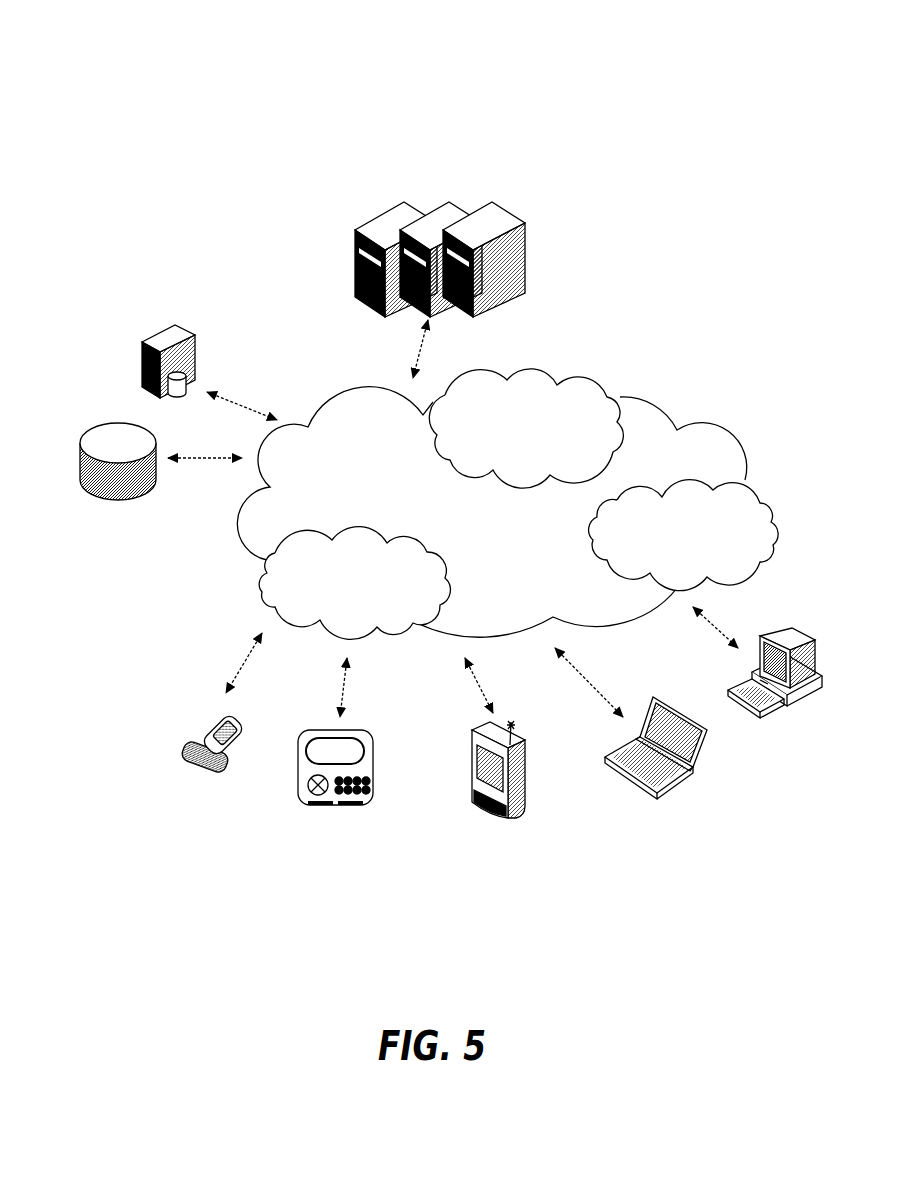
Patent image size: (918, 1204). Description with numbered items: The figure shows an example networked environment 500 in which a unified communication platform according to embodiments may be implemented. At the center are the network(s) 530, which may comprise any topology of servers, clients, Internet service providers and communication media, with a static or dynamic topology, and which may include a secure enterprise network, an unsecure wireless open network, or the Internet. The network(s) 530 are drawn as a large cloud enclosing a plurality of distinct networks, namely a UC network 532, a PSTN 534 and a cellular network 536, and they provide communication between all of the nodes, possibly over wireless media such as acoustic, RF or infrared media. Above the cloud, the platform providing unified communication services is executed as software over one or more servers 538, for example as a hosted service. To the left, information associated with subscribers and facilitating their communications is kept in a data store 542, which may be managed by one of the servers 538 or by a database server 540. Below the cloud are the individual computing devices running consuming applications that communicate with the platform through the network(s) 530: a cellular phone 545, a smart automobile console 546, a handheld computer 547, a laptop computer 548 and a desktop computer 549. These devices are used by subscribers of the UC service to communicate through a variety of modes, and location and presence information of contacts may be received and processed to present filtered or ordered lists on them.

The network environment 500 is at (633, 72).
The network(s) 530 is at (366, 378).
The UC network 532 is at (561, 375).
The PSTN 534 is at (309, 524).
The cellular network 536 is at (658, 473).
The servers 538 is at (367, 202).
The database server 540 is at (168, 315).
The data store 542 is at (130, 415).
The cellular phone 545 is at (189, 784).
The smart automobile console 546 is at (338, 827).
The handheld computer 547 is at (506, 831).
The laptop computer 548 is at (681, 806).
The desktop computer 549 is at (812, 720).